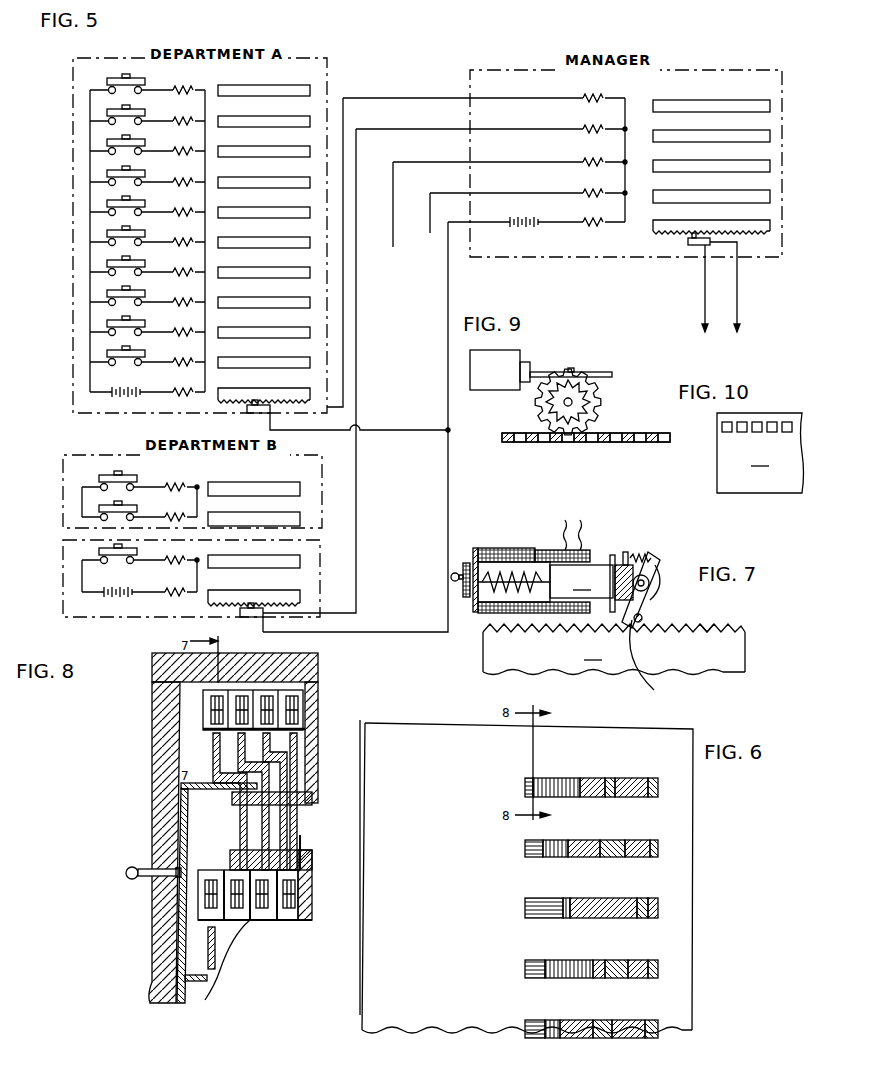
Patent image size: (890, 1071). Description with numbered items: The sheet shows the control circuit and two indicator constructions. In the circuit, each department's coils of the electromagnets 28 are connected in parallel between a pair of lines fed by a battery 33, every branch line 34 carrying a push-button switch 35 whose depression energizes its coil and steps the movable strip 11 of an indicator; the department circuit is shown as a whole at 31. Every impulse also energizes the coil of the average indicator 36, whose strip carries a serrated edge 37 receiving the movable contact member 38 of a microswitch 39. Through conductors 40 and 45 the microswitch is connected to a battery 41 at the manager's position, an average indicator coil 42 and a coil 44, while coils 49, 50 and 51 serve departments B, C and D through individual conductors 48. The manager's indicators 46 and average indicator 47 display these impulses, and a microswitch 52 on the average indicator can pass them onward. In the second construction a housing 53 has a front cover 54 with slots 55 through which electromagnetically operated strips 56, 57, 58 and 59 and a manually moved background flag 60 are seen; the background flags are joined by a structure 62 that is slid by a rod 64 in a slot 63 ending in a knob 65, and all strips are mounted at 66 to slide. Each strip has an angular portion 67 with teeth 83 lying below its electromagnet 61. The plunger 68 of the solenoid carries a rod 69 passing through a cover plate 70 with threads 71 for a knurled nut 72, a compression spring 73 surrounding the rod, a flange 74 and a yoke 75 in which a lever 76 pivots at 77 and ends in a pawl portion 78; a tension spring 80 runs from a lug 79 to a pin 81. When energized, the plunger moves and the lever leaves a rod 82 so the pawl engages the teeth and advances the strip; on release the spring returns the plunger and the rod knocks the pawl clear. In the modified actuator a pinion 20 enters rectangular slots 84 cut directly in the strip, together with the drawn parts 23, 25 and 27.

In FIG. 9, the movable strip 11 is at (598, 442).
In FIG. 10, the movable strip 11 is at (760, 453).
In FIG. 9, the pinion 20 is at (601, 395).
In FIG. 9, the ratchet wheel 23 is at (550, 402).
In FIG. 9, the rack bar 25 is at (612, 377).
In FIG. 9, the shaft 27 is at (530, 363).
In FIG. 5, the electromagnet 28 is at (193, 90).
In FIG. 9, the electromagnet 28 is at (495, 370).
In FIG. 5, the department circuit 31 is at (90, 233).
In FIG. 5, the battery 33 is at (139, 390).
In FIG. 5, the branch line 34 is at (160, 90).
In FIG. 5, the push-button switch 35 is at (114, 79).
In FIG. 5, the average indicator 36 is at (290, 390).
In FIG. 5, the serrated edge 37 is at (292, 402).
In FIG. 5, the movable contact member 38 is at (250, 407).
In FIG. 5, the microswitch 39 is at (250, 413).
In FIG. 5, the conductor 40 is at (448, 343).
In FIG. 5, the battery 41 is at (520, 218).
In FIG. 5, the average indicator coil 42 is at (591, 221).
In FIG. 5, the coil 44 is at (590, 97).
In FIG. 5, the conductor 45 is at (343, 311).
In FIG. 5, the indicators 46 is at (770, 137).
In FIG. 5, the average indicator 47 is at (762, 233).
In FIG. 5, the conductor 48 is at (323, 371).
In FIG. 5, the coil 49 is at (591, 128).
In FIG. 5, the coil 50 is at (591, 161).
In FIG. 5, the coil 51 is at (589, 192).
In FIG. 5, the microswitch 52 is at (688, 244).
In FIG. 8, the housing 53 is at (152, 800).
In FIG. 8, the front cover 54 is at (318, 752).
In FIG. 8, the slots 55 is at (312, 840).
In FIG. 8, the electromagnetically operated strip 56 is at (305, 785).
In FIG. 6, the electromagnetically operated strip 56 is at (526, 784).
In FIG. 8, the electromagnetically operated strip 57 is at (299, 818).
In FIG. 6, the electromagnetically operated strip 57 is at (564, 773).
In FIG. 8, the electromagnetically operated strip 58 is at (252, 829).
In FIG. 6, the electromagnetically operated strip 58 is at (593, 778).
In FIG. 8, the electromagnetically operated strip 59 is at (240, 838).
In FIG. 6, the electromagnetically operated strip 59 is at (618, 778).
In FIG. 8, the background flag 60 is at (245, 850).
In FIG. 6, the background flag 60 is at (645, 778).
In FIG. 7, the electromagnet 61 is at (517, 548).
In FIG. 8, the electromagnet 61 is at (211, 698).
In FIG. 8, the structure 62 is at (186, 940).
In FIG. 8, the slot 63 is at (142, 880).
In FIG. 8, the rod 64 is at (144, 868).
In FIG. 8, the knob 65 is at (126, 875).
In FIG. 8, the mounting 66 is at (232, 800).
In FIG. 7, the angular portion 67 is at (614, 649).
In FIG. 8, the angular portion 67 is at (213, 742).
In FIG. 7, the plunger 68 is at (581, 581).
In FIG. 7, the rod 69 is at (530, 574).
In FIG. 7, the cover plate 70 is at (476, 550).
In FIG. 7, the threads 71 is at (454, 571).
In FIG. 7, the knurled nut 72 is at (467, 598).
In FIG. 7, the compression spring 73 is at (547, 588).
In FIG. 7, the flange 74 is at (613, 558).
In FIG. 7, the yoke 75 is at (652, 600).
In FIG. 7, the lever 76 is at (652, 662).
In FIG. 7, the pivot 77 is at (649, 583).
In FIG. 7, the pawl portion 78 is at (628, 618).
In FIG. 7, the lug 79 is at (659, 560).
In FIG. 7, the tension spring 80 is at (650, 557).
In FIG. 7, the pin 81 is at (628, 556).
In FIG. 7, the rod 82 is at (644, 618).
In FIG. 8, the rod 82 is at (305, 728).
In FIG. 7, the teeth 83 is at (707, 631).
In FIG. 9, the rectangular slots 84 is at (528, 442).
In FIG. 10, the rectangular slots 84 is at (722, 426).